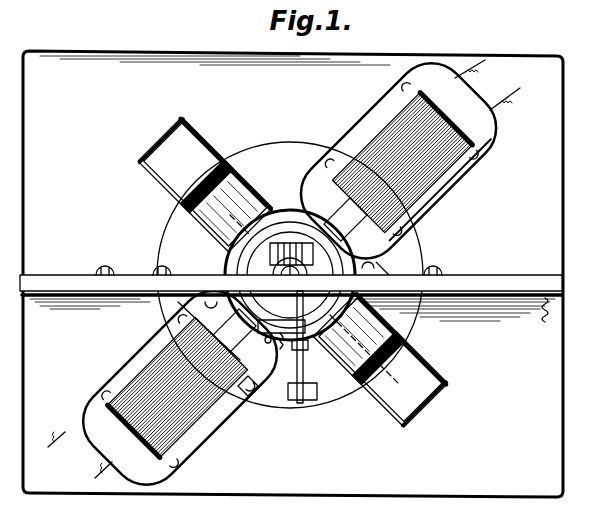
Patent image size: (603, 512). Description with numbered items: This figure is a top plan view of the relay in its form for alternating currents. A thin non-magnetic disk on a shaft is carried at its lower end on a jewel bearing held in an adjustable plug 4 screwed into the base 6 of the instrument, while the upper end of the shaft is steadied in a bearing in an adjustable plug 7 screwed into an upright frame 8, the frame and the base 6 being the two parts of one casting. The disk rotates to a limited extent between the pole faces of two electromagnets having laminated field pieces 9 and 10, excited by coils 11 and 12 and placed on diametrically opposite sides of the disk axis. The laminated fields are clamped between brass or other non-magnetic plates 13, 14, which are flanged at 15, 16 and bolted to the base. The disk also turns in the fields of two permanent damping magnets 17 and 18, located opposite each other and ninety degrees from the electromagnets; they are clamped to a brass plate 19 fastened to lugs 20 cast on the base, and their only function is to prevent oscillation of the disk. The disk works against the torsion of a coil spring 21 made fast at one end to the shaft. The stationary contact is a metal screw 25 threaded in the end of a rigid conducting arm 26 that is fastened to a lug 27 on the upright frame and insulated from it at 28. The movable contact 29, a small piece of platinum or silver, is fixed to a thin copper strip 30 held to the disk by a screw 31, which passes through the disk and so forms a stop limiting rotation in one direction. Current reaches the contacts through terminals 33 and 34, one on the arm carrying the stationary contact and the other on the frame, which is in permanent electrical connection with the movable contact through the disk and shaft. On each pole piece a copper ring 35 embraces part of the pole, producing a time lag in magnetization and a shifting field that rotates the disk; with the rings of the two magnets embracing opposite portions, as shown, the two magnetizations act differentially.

The adjustable plug 4 is at (232, 270).
The base 6 is at (545, 378).
The adjustable plug 7 is at (300, 142).
The upright frame 8 is at (476, 290).
The laminated field piece 9 is at (162, 352).
The laminated field piece 10 is at (470, 135).
The coil 11 is at (118, 440).
The coil 12 is at (493, 165).
The non-magnetic plate 13 is at (382, 150).
The non-magnetic plate 14 is at (420, 206).
The flange 15 is at (368, 130).
The flange 16 is at (432, 232).
The permanent damping magnet 17 is at (193, 153).
The permanent damping magnet 18 is at (427, 365).
The plate 19 is at (232, 160).
The lug 20 is at (150, 152).
The coil spring 21 is at (292, 240).
The metal screw 25 is at (305, 400).
The rigid arm 26 is at (325, 338).
The lug 27 is at (281, 313).
The insulation 28 is at (266, 338).
The movable contact 29 is at (302, 352).
The thin metal strip 30 is at (296, 402).
The screw 31 is at (249, 398).
The terminal 33 is at (281, 340).
The terminal 34 is at (538, 316).
The copper ring 35 is at (306, 286).